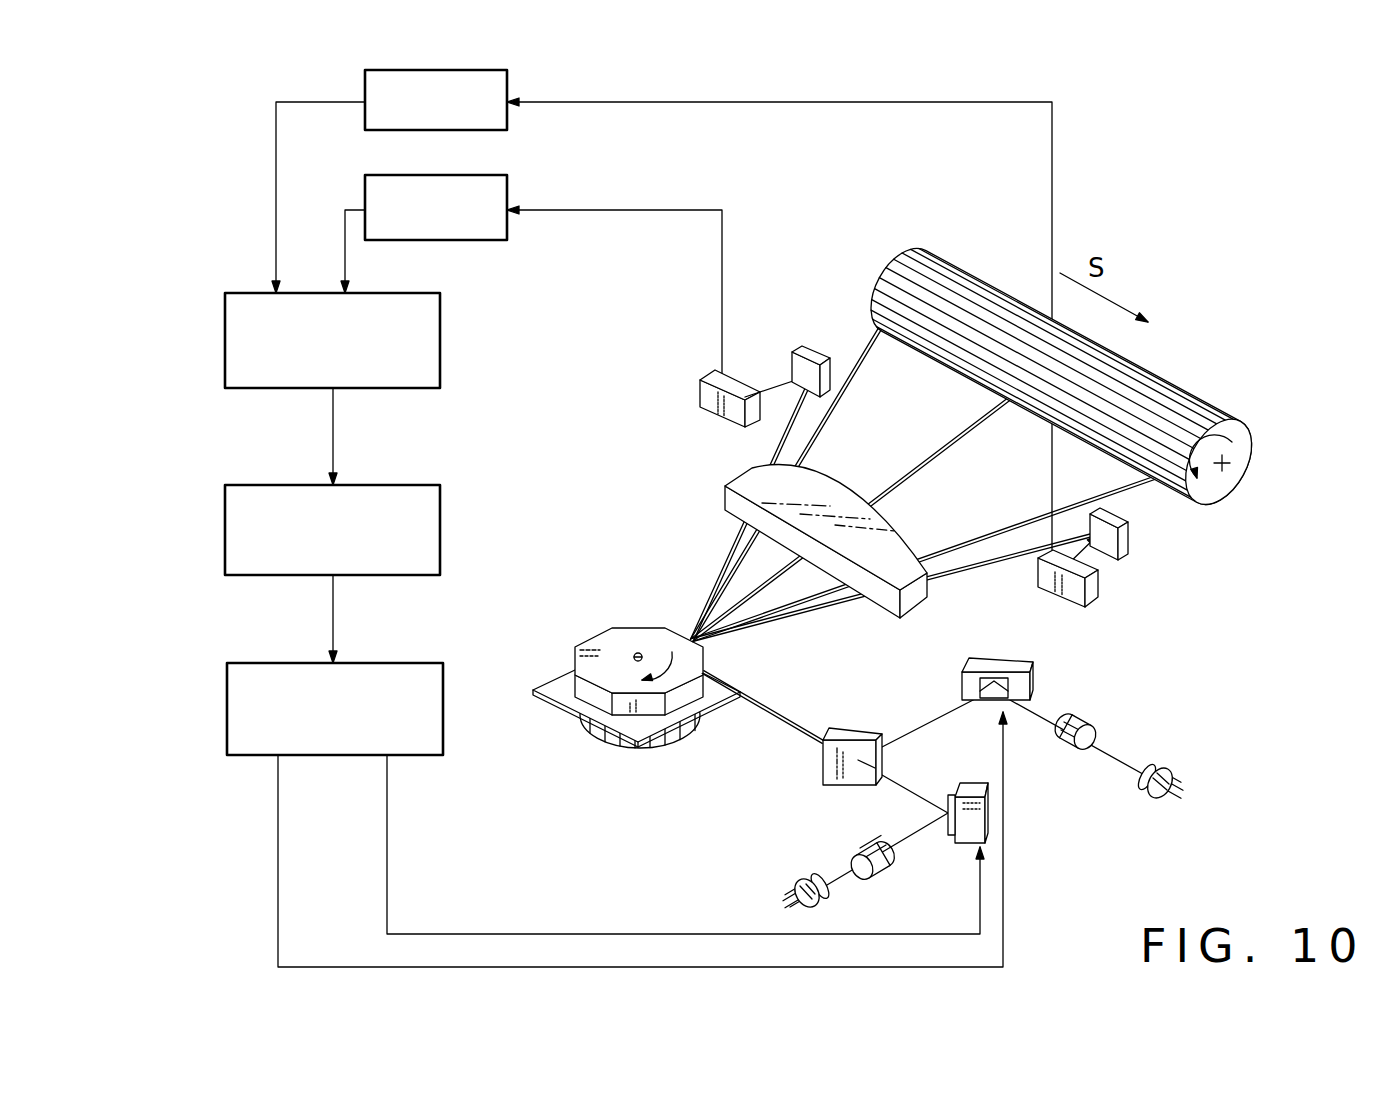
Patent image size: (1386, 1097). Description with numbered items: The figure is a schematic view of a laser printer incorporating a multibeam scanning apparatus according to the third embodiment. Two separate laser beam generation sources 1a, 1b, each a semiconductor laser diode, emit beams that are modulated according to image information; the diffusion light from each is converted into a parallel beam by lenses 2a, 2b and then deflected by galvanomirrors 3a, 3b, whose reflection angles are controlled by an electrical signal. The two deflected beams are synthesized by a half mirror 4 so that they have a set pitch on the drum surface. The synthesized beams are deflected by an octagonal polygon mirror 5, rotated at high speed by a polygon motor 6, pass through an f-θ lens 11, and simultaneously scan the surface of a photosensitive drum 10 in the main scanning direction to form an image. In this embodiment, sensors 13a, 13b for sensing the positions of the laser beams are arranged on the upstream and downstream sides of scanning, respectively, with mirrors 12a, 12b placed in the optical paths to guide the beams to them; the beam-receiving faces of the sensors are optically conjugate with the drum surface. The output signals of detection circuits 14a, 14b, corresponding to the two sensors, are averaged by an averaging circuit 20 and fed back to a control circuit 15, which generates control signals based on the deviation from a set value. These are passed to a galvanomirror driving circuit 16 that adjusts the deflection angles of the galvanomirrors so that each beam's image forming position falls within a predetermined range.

The laser beam generation source 1a is at (796, 890).
The laser beam generation source 1b is at (1146, 795).
The lens 2a is at (880, 866).
The lens 2b is at (1097, 736).
The galvanomirror 3a is at (966, 840).
The galvanomirror 3b is at (1033, 678).
The half mirror 4 is at (830, 768).
The polygon mirror 5 is at (602, 645).
The polygon motor 6 is at (592, 742).
The photosensitive drum 10 is at (1222, 406).
The f-θ lens 11 is at (915, 600).
The mirror 12a is at (797, 356).
The mirror 12b is at (1128, 543).
The sensor 13a is at (700, 380).
The sensor 13b is at (1100, 590).
The detection circuit 14a is at (507, 238).
The detection circuit 14b is at (507, 125).
The control circuit 15 is at (225, 540).
The galvanomirror driving circuit 16 is at (227, 727).
The averaging circuit 20 is at (225, 355).